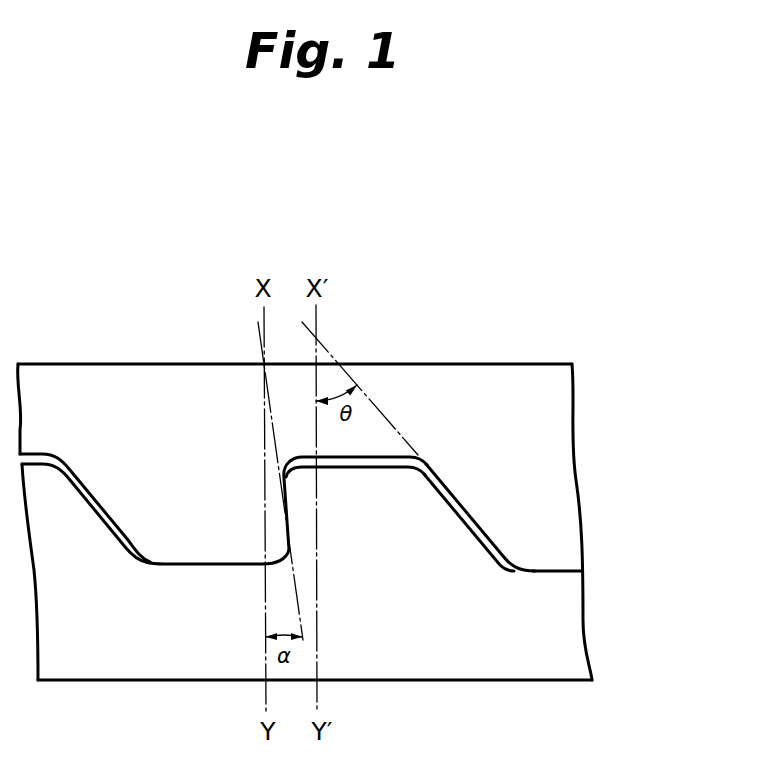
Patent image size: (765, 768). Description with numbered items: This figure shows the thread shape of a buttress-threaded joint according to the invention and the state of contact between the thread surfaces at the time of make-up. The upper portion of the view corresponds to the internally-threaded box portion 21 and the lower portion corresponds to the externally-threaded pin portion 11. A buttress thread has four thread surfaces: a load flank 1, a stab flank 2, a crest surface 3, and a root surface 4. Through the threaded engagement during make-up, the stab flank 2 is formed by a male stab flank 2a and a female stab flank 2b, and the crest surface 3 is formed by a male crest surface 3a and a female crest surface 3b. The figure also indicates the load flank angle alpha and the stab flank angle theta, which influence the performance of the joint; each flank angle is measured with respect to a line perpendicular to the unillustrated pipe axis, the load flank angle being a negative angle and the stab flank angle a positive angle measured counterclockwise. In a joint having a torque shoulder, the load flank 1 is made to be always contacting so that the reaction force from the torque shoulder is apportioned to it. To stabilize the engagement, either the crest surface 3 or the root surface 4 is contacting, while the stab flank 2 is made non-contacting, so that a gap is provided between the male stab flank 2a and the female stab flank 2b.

The load flank 1 is at (284, 507).
The stab flank 2 is at (521, 529).
The male stab flank 2a is at (455, 518).
The female stab flank 2b is at (460, 503).
The crest surface 3 is at (385, 426).
The male crest surface 3a is at (397, 469).
The female crest surface 3b is at (398, 452).
The root surface 4 is at (192, 565).
The pin portion 11 is at (492, 640).
The box portion 21 is at (460, 392).